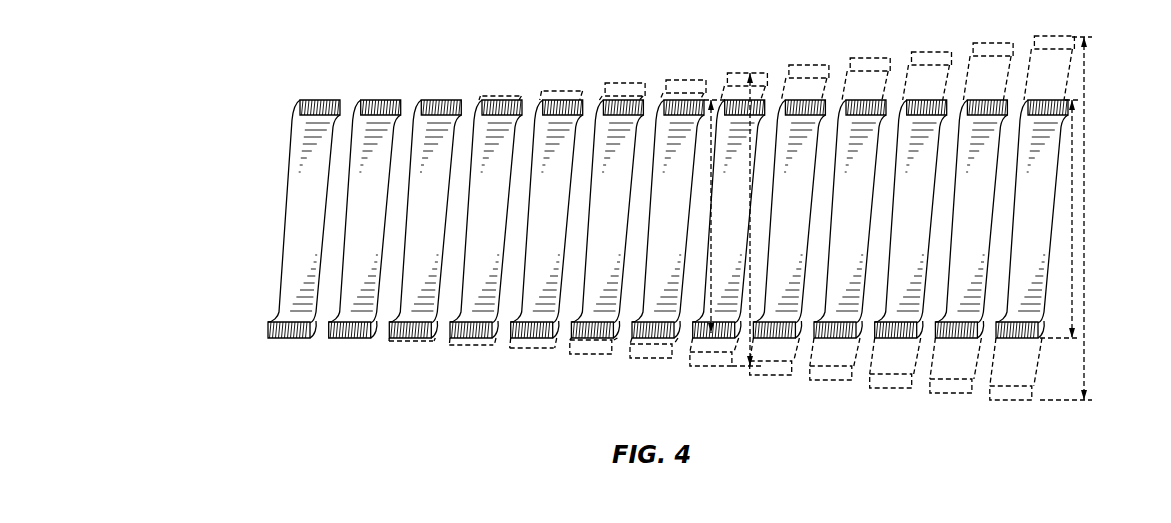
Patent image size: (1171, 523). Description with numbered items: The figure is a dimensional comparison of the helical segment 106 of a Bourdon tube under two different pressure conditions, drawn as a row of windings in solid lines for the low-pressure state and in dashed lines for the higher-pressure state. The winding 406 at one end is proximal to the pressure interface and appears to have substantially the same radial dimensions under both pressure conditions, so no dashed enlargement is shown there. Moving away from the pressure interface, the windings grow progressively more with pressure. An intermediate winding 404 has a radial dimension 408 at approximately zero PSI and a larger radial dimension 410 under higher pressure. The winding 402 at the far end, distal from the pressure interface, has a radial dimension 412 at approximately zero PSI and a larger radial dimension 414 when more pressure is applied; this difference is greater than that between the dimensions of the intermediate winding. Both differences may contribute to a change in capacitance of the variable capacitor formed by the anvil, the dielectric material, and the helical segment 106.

The helical segment 106 is at (271, 48).
The winding 402 is at (1016, 375).
The winding 404 is at (727, 302).
The winding 406 is at (301, 205).
The radial dimension 408 is at (710, 158).
The radial dimension 410 is at (752, 96).
The radial dimension 412 is at (1072, 216).
The radial dimension 414 is at (1085, 155).